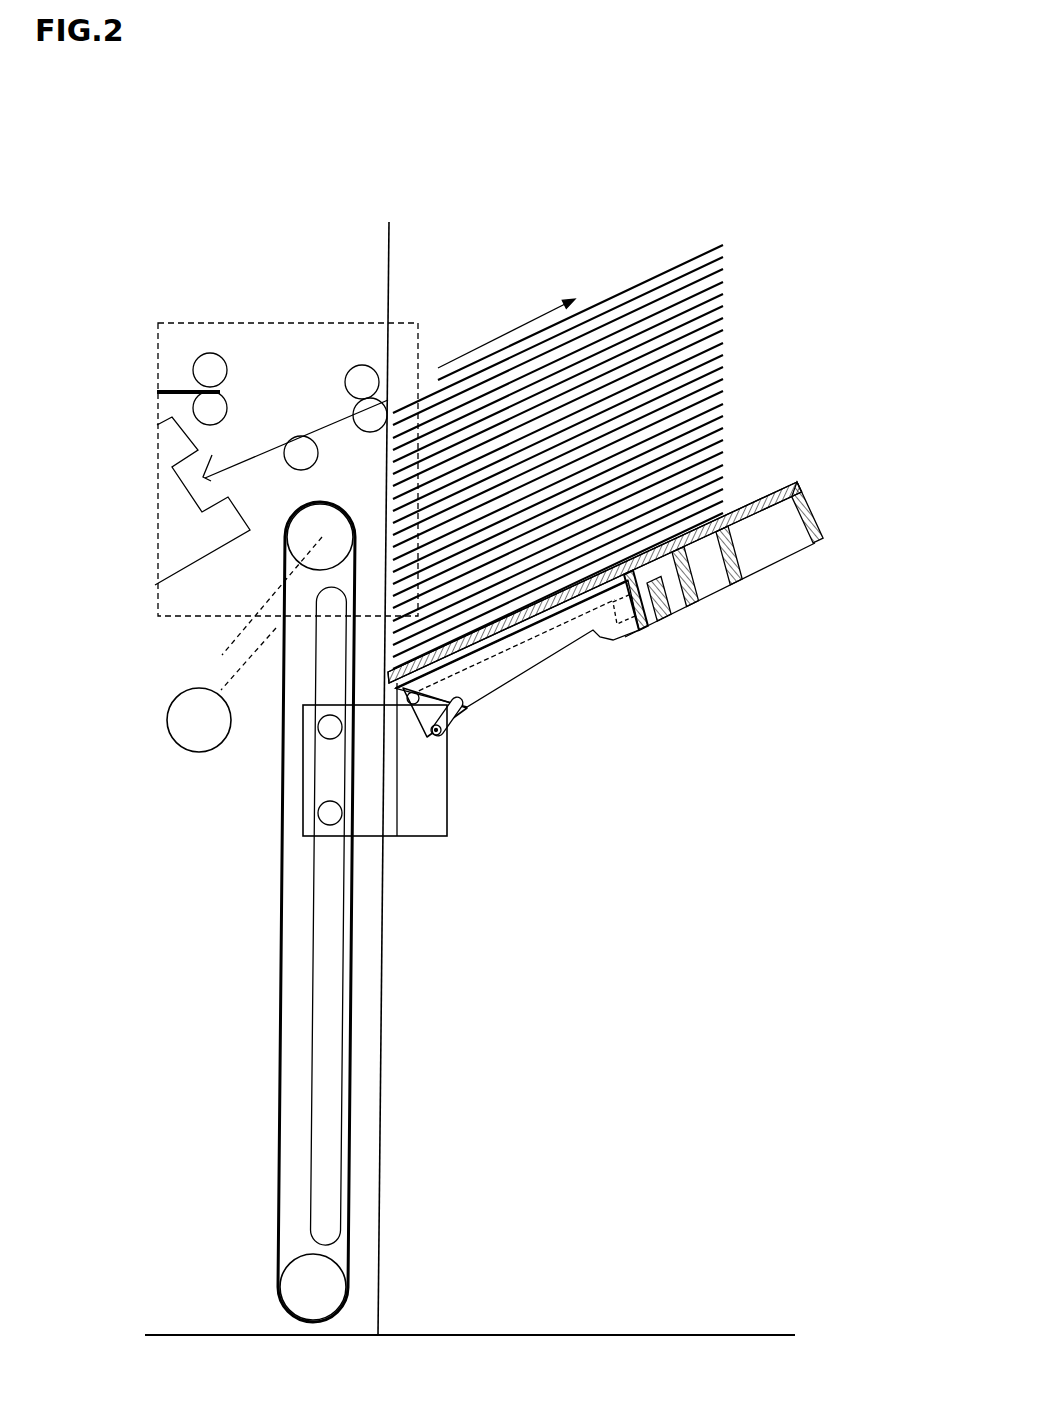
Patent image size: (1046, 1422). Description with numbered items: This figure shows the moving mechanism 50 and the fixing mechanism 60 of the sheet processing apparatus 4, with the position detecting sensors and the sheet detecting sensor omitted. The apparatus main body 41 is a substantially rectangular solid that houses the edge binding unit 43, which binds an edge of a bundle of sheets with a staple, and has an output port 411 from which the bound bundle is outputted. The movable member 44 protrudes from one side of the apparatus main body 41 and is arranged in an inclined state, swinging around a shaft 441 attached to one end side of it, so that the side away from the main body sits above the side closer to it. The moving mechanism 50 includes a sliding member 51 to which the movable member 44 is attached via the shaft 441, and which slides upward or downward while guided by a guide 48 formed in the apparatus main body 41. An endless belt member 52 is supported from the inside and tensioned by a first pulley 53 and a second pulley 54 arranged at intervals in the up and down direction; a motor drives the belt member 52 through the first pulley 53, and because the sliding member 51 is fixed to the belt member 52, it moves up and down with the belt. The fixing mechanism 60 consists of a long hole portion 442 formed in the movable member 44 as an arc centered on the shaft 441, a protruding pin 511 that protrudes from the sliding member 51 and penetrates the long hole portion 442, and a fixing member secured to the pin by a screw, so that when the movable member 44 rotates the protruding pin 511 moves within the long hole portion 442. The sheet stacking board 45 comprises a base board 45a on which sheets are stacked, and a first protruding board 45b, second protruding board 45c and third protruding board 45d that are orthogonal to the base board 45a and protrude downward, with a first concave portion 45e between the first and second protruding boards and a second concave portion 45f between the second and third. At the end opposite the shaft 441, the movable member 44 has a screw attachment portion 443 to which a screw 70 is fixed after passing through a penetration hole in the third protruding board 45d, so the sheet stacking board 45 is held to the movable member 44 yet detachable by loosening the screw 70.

The sheet processing apparatus 4 is at (84, 203).
The apparatus main body 41 is at (381, 1198).
The output port 411 is at (395, 383).
The edge binding unit 43 is at (237, 323).
The movable member 44 is at (547, 642).
The shaft 441 is at (455, 707).
The long hole portion 442 is at (447, 720).
The screw attachment portion 443 is at (632, 650).
The sheet stacking board 45 is at (803, 450).
The base board 45a is at (763, 492).
The first protruding board 45b is at (790, 548).
The second protruding board 45c is at (707, 575).
The third protruding board 45d is at (642, 615).
The first concave portion 45e is at (745, 560).
The second concave portion 45f is at (667, 600).
The guide 48 is at (318, 1033).
The moving mechanism 50 is at (163, 950).
The sliding member 51 is at (303, 780).
The protruding pin 511 is at (436, 735).
The belt member 52 is at (282, 1160).
The first pulley 53 is at (303, 538).
The second pulley 54 is at (306, 1290).
The fixing mechanism 60 is at (423, 757).
The screw 70 is at (633, 620).